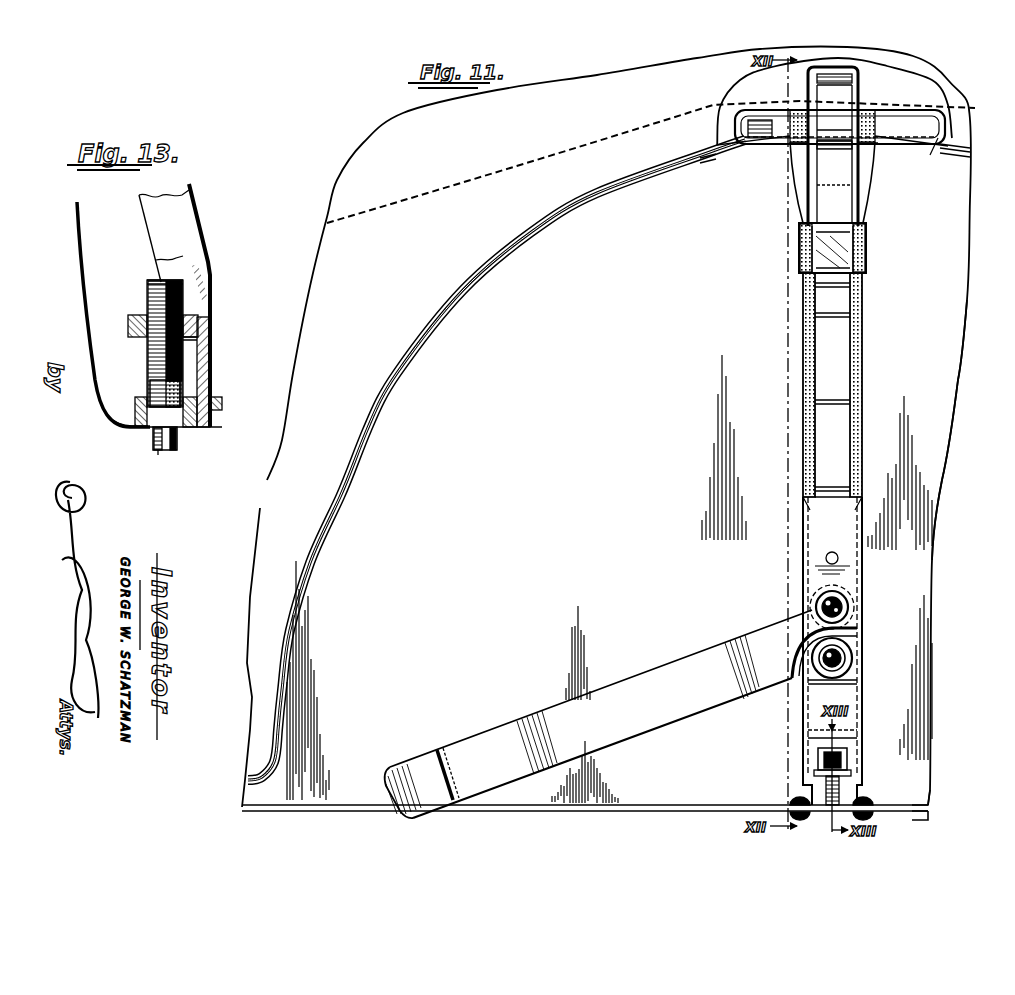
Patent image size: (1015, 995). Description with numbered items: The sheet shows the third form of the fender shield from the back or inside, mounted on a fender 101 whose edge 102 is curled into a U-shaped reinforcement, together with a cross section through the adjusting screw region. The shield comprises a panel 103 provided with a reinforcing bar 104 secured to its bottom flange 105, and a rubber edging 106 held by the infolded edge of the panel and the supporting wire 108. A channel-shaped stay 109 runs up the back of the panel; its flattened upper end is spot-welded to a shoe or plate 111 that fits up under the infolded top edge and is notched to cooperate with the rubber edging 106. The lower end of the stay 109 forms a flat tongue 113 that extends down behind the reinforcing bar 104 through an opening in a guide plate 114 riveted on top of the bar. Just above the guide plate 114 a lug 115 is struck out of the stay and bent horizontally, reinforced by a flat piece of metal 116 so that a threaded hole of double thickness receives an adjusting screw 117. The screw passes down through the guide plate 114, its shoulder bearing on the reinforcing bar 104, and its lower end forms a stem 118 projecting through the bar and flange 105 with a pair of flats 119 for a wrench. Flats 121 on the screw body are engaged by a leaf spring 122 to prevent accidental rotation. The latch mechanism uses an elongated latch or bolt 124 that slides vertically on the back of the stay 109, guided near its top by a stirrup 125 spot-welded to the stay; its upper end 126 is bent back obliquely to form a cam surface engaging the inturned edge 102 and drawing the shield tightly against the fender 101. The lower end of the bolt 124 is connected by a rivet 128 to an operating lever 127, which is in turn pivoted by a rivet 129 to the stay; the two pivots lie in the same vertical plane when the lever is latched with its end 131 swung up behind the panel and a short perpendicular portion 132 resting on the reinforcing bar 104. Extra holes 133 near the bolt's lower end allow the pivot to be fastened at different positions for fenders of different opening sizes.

In FIG. 11, the fender 101 is at (957, 93).
In FIG. 11, the edge of fender 102 is at (263, 763).
In FIG. 11, the panel 103 is at (947, 349).
In FIG. 13, the panel 103 is at (77, 243).
In FIG. 11, the reinforcing bar 104 is at (920, 805).
In FIG. 13, the reinforcing bar 104 is at (130, 421).
In FIG. 11, the bottom flange 105 is at (915, 816).
In FIG. 13, the bottom flange 105 is at (186, 432).
In FIG. 11, the rubber edging 106 is at (936, 110).
In FIG. 11, the supporting wire 108 is at (927, 158).
In FIG. 11, the stay 109 is at (848, 696).
In FIG. 13, the stay 109 is at (180, 218).
In FIG. 11, the shoe or plate 111 is at (772, 128).
In FIG. 13, the flat tongue 113 is at (210, 365).
In FIG. 11, the guide plate 114 is at (871, 808).
In FIG. 13, the guide plate 114 is at (218, 406).
In FIG. 13, the lug 115 is at (128, 330).
In FIG. 13, the flat piece of metal 116 is at (146, 312).
In FIG. 11, the adjusting screw 117 is at (843, 760).
In FIG. 13, the adjusting screw 117 is at (147, 352).
In FIG. 13, the stem 118 is at (153, 444).
In FIG. 13, the flats 119 is at (160, 450).
In FIG. 13, the flats 121 is at (160, 387).
In FIG. 11, the leaf spring 122 is at (812, 803).
In FIG. 11, the latch or bolt 124 is at (840, 439).
In FIG. 11, the stirrup 125 is at (866, 256).
In FIG. 11, the upper end of latch 126 is at (852, 77).
In FIG. 11, the operating lever 127 is at (636, 695).
In FIG. 11, the rivet 128 is at (848, 604).
In FIG. 11, the rivet 129 is at (852, 657).
In FIG. 11, the end of lever 131 is at (417, 763).
In FIG. 11, the short portion 132 is at (441, 750).
In FIG. 11, the extra holes 133 is at (826, 559).